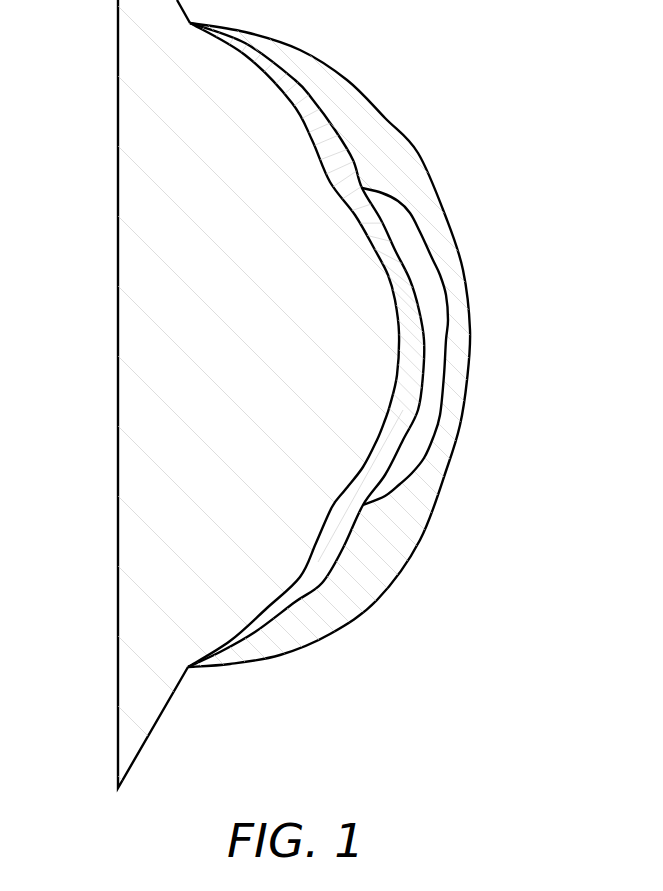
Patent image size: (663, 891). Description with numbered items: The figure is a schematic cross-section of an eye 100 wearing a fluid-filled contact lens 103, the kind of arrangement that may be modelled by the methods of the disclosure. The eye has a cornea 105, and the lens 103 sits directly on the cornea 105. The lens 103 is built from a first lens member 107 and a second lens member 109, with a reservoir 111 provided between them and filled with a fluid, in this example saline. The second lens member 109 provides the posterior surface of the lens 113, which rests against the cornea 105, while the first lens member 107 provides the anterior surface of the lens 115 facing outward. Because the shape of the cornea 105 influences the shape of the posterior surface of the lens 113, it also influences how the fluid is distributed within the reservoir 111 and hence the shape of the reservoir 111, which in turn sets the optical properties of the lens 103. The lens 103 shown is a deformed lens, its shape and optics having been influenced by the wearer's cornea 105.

The eye 100 is at (136, 192).
The fluid-filled contact lens 103 is at (405, 68).
The cornea 105 is at (373, 313).
The first lens member 107 is at (443, 458).
The second lens member 109 is at (310, 580).
The reservoir 111 is at (437, 344).
The posterior surface of the lens 113 is at (313, 545).
The anterior surface of the lens 115 is at (418, 153).